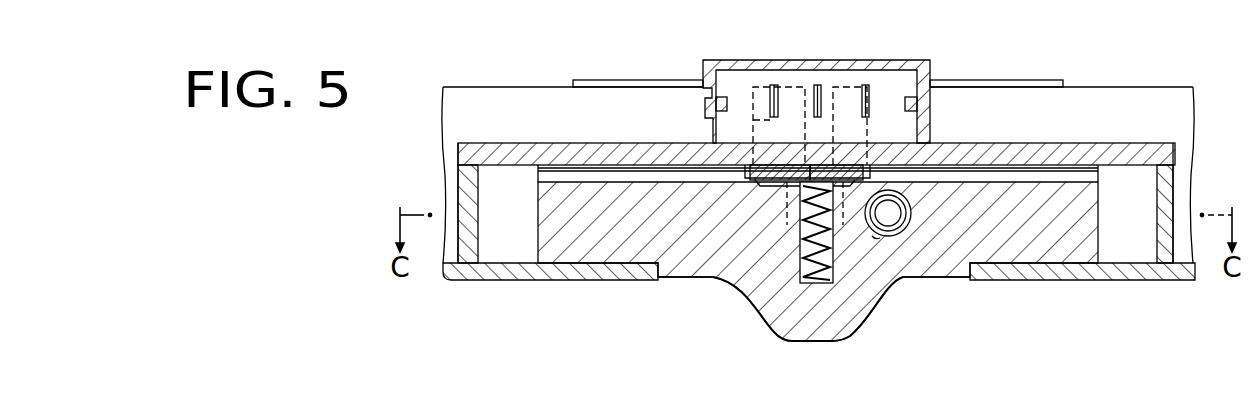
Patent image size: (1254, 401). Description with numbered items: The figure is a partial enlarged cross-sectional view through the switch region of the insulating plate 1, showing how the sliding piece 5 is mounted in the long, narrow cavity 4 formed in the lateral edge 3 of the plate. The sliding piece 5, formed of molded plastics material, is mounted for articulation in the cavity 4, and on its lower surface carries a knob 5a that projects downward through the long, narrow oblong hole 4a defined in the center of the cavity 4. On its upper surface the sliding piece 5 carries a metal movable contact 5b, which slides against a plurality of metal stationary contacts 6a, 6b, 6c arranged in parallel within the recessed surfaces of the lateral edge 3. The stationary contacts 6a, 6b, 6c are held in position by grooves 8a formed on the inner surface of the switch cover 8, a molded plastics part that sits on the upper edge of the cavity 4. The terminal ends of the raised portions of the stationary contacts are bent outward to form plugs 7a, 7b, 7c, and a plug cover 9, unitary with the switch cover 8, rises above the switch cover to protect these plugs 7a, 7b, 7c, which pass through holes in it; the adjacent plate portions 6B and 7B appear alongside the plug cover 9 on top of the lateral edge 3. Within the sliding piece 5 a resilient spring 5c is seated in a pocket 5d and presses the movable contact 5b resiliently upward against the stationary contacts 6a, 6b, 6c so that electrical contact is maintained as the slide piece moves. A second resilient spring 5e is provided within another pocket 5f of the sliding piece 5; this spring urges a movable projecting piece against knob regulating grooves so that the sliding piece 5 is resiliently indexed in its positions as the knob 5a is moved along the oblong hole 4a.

The insulating plate 1 is at (1128, 87).
The lateral edge 3 is at (492, 95).
The cavity 4 is at (504, 253).
The oblong hole 4a is at (680, 276).
The sliding piece 5 is at (593, 253).
The knob 5a is at (773, 313).
The movable contact 5b is at (752, 153).
The resilient spring 5c is at (834, 288).
The pocket 5d is at (786, 247).
The resilient spring 5e is at (895, 222).
The pocket 5f is at (872, 237).
The stationary contact 6a is at (700, 147).
The stationary contact 6b is at (808, 158).
The stationary contact 6c is at (868, 157).
The plate 6B is at (618, 82).
The plug 7a is at (772, 87).
The plug 7b is at (817, 86).
The plug 7c is at (865, 86).
The plate 7B is at (990, 82).
The switch cover 8 is at (552, 154).
The grooves 8a is at (704, 107).
The plug cover 9 is at (728, 61).